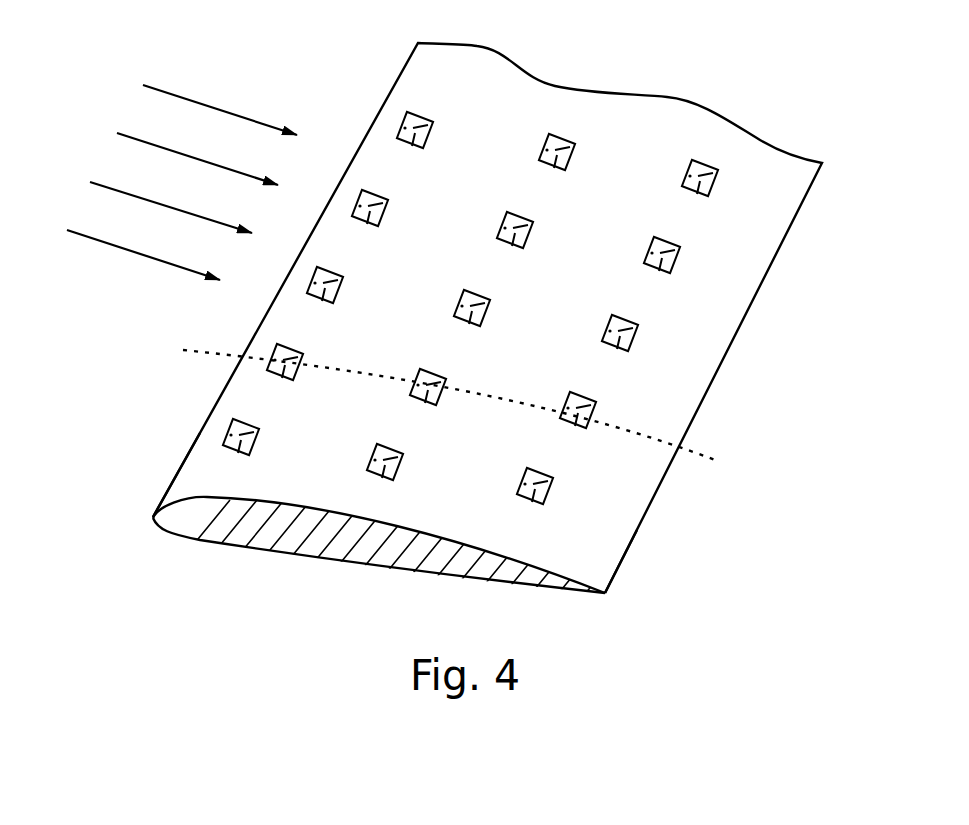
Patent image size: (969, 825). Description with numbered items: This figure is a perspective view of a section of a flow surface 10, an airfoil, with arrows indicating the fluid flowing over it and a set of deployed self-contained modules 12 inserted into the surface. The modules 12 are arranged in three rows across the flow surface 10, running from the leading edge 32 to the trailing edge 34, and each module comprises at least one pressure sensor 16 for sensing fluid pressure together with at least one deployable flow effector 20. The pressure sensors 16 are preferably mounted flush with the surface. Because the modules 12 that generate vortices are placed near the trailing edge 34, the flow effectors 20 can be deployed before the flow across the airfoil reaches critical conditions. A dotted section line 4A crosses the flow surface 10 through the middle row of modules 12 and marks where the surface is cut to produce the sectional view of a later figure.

The flow surface 10 is at (615, 128).
The self-contained module 12 is at (717, 190).
The pressure sensor 16 is at (677, 267).
The deployable flow effector 20 is at (635, 335).
The leading edge 32 is at (202, 433).
The trailing edge 34 is at (637, 533).
The section line 4A-4A' 4A is at (448, 409).